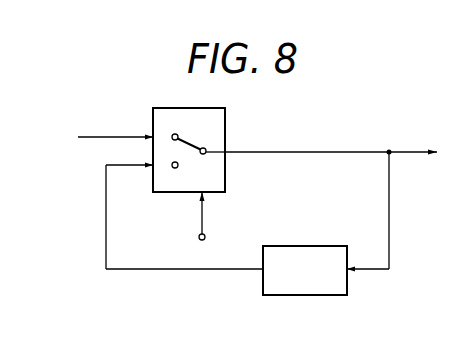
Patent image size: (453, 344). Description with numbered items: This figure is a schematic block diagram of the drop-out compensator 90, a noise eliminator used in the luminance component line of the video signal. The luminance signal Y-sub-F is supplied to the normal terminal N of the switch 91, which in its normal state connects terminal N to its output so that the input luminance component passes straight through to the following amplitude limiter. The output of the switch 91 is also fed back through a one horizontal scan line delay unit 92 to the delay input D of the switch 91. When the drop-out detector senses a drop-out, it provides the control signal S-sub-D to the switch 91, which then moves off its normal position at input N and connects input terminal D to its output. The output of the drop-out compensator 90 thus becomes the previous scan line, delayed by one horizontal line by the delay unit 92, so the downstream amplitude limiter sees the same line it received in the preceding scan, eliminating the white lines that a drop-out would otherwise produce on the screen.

The drop-out compensator 90 is at (317, 200).
The switch 91 is at (226, 124).
The one horizontal scan line (1H) delay unit 92 is at (308, 245).